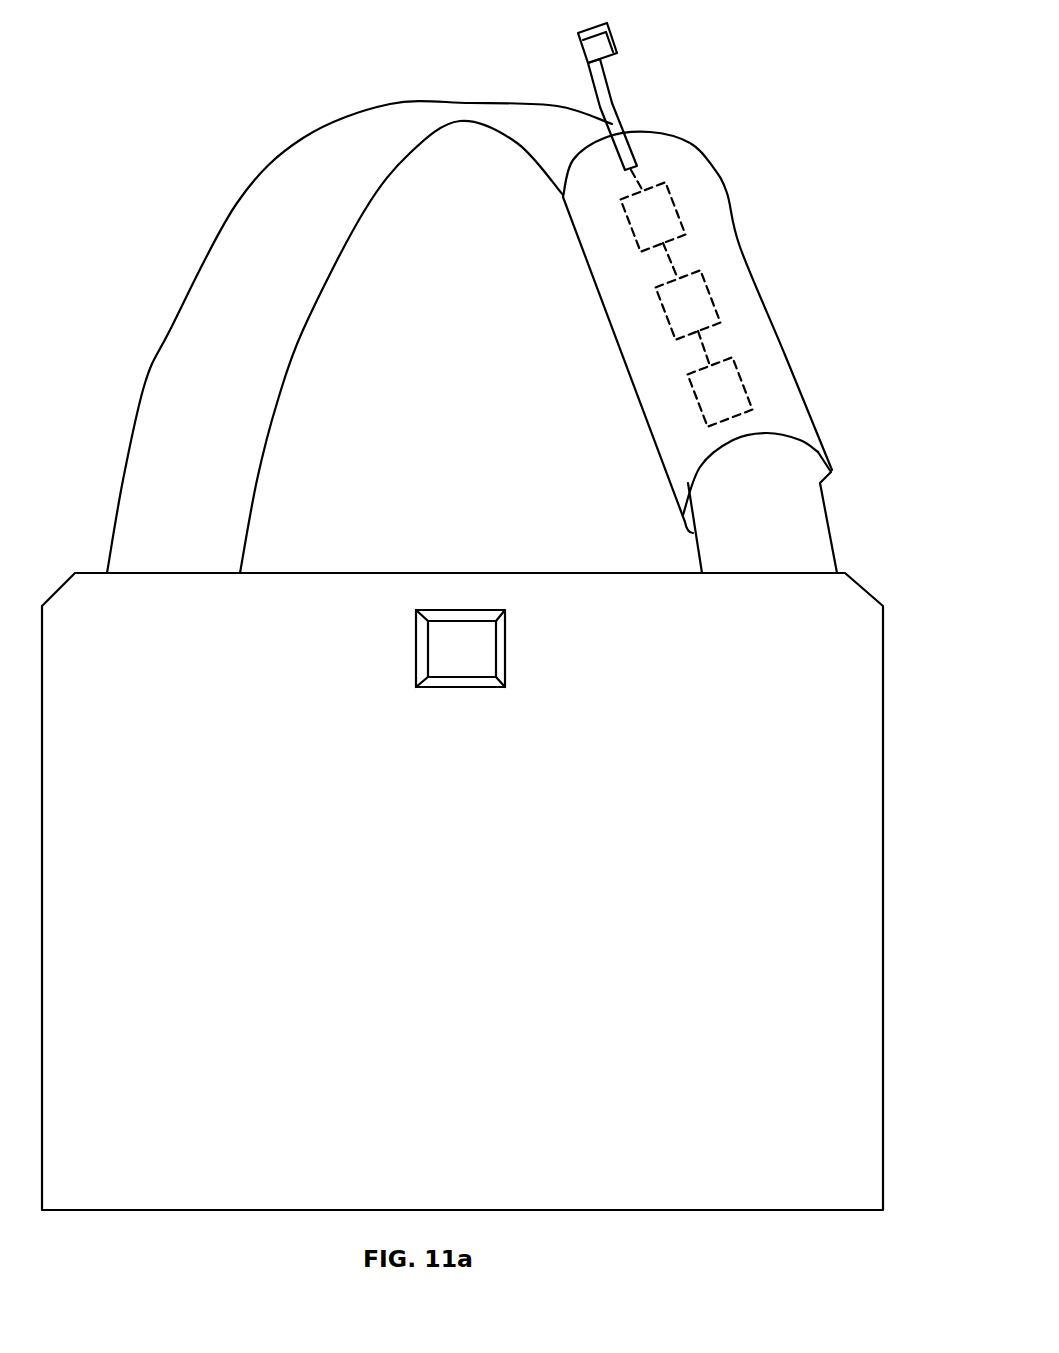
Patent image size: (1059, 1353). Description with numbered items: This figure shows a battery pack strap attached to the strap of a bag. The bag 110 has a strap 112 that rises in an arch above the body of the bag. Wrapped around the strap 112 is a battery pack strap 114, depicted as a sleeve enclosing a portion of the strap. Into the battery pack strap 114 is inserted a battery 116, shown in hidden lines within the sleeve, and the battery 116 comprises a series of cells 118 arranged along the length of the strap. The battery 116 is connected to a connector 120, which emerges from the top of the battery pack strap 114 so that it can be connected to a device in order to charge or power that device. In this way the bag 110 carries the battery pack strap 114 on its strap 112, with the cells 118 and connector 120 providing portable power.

The bag 110 is at (478, 971).
The strap 112 is at (265, 311).
The battery pack strap 114 is at (657, 464).
The battery 116 is at (642, 269).
The cells 118 is at (695, 403).
The connector 120 is at (612, 42).